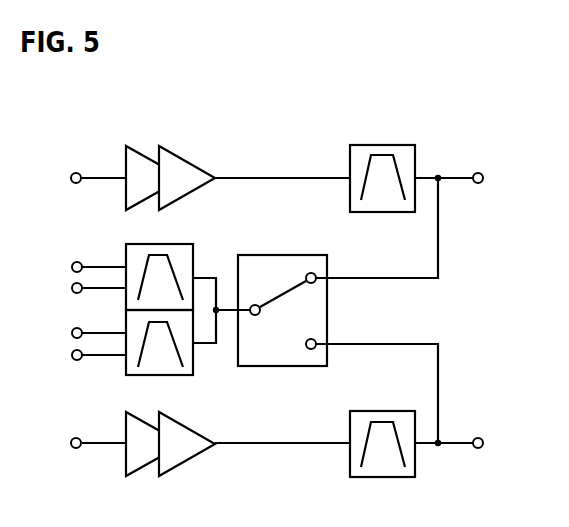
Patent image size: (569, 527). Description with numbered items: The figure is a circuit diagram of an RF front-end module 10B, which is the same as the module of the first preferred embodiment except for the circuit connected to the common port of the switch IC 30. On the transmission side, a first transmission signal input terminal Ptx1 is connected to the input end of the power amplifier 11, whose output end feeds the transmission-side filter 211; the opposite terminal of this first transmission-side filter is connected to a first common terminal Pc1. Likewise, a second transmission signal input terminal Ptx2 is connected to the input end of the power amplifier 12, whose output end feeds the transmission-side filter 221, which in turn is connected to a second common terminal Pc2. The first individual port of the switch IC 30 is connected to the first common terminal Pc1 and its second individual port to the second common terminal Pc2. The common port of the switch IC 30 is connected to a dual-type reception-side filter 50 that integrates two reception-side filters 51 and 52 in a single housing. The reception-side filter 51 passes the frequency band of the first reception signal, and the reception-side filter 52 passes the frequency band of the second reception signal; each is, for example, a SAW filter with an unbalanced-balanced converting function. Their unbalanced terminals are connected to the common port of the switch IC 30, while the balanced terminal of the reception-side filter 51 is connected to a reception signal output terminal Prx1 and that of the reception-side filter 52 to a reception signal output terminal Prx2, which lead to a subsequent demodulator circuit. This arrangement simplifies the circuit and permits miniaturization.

The RF front-end module 10B is at (474, 78).
The power amplifier 11 is at (190, 160).
The power amplifier 12 is at (194, 428).
The transmission-side filter 211 is at (408, 145).
The transmission-side filter 221 is at (400, 477).
The dual-type reception-side filter 50 is at (184, 300).
The reception-side filter 51 is at (190, 239).
The reception-side filter 52 is at (193, 370).
The switch IC 30 is at (311, 255).
The first transmission signal input terminal Ptx1 is at (62, 167).
The second transmission signal input terminal Ptx2 is at (61, 433).
The reception signal output terminal Prx1 is at (55, 267).
The reception signal output terminal Prx2 is at (55, 332).
The first common terminal Pc1 is at (490, 164).
The second common terminal Pc2 is at (490, 430).